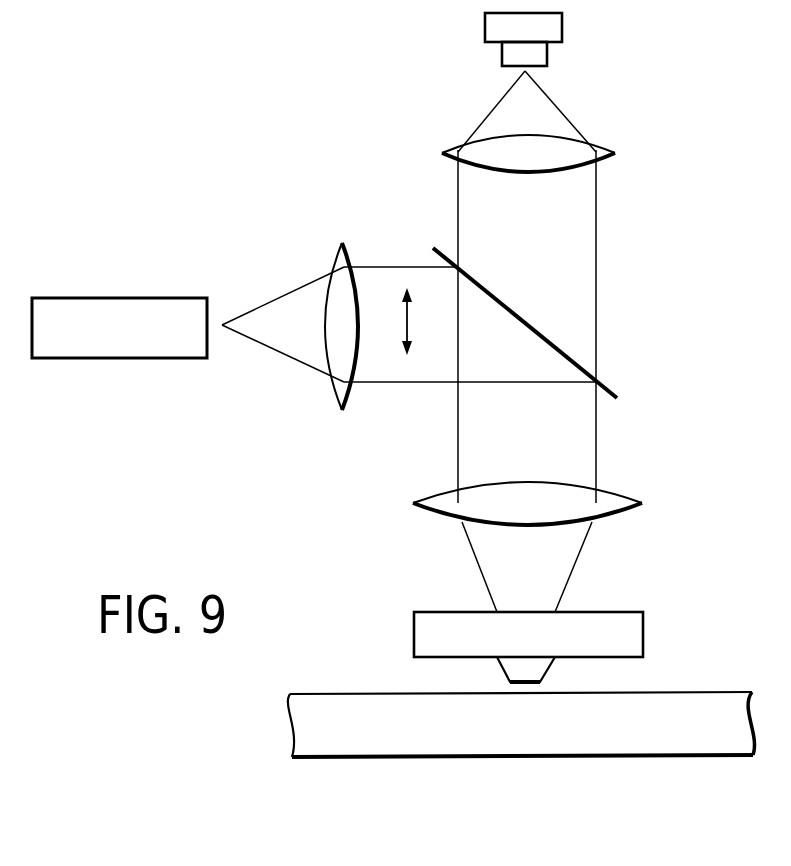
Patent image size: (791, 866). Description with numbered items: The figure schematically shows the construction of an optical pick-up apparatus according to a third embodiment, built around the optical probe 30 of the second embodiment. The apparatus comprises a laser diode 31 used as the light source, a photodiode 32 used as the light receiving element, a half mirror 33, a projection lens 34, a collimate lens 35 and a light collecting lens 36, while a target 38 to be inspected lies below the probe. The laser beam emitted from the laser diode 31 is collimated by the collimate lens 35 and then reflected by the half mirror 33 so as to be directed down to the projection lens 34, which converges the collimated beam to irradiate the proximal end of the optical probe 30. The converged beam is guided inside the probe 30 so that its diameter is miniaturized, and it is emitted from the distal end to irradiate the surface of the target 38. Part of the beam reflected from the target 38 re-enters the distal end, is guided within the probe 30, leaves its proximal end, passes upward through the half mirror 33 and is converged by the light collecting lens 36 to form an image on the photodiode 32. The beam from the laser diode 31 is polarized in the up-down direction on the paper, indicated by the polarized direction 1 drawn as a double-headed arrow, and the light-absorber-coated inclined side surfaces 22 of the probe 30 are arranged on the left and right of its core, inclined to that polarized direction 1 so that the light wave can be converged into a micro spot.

The polarized direction 1 is at (394, 323).
The inclined side surfaces 22 is at (550, 677).
The optical probe 30 is at (645, 631).
The laser diode 31 is at (117, 298).
The photodiode 32 is at (562, 22).
The half mirror 33 is at (612, 392).
The projection lens 34 is at (642, 504).
The collimate lens 35 is at (337, 262).
The light collecting lens 36 is at (612, 151).
The target 38 is at (503, 758).